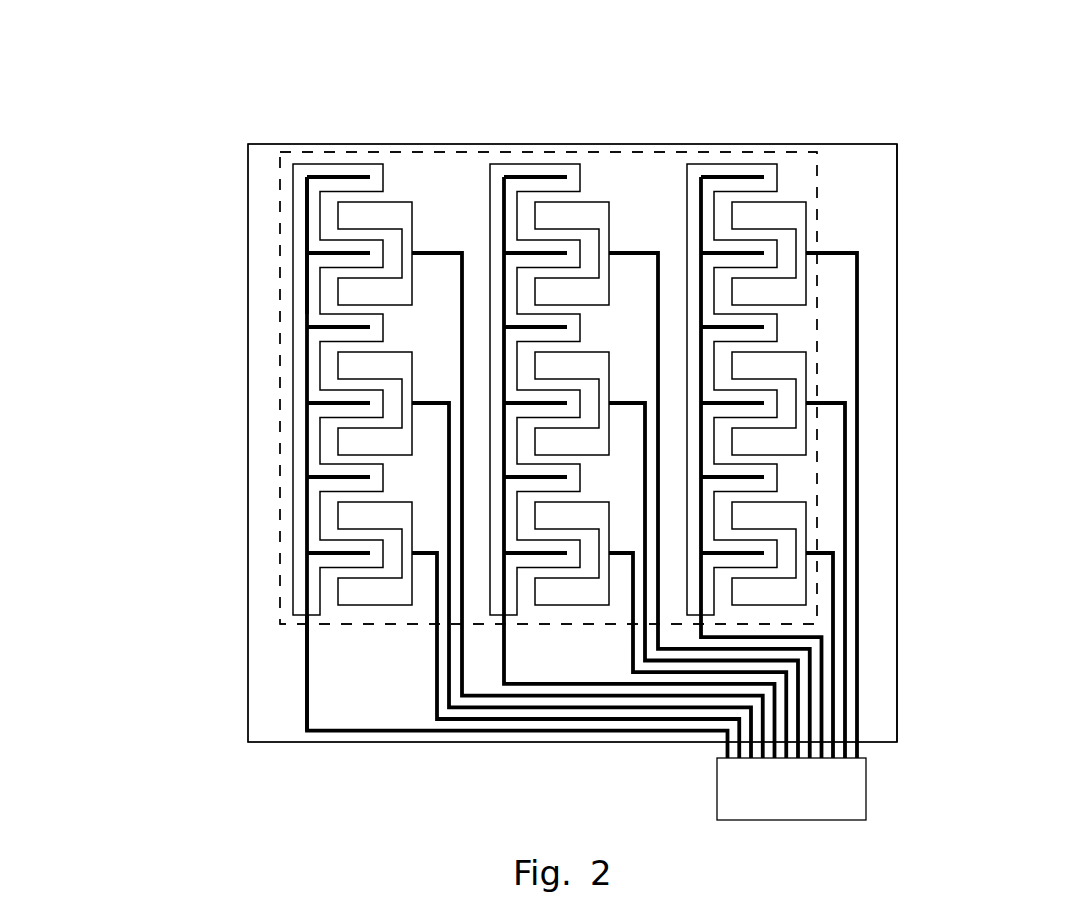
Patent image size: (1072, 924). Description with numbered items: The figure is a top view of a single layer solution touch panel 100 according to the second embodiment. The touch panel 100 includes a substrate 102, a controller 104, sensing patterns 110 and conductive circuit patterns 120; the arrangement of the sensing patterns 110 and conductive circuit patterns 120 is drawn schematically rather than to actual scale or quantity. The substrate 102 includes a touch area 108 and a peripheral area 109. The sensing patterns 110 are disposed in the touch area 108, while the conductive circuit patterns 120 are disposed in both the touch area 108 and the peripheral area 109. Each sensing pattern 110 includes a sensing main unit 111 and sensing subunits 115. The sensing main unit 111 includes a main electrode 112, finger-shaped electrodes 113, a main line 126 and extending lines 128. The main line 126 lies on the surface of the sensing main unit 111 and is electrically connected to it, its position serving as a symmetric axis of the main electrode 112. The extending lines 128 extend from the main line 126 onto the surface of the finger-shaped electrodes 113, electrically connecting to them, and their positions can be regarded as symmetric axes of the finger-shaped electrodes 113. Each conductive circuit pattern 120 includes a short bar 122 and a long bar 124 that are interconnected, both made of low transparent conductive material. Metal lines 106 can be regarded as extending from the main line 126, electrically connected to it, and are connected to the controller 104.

The single layer solution touch panel 100 is at (82, 65).
The substrate 102 is at (268, 157).
The controller 104 is at (865, 788).
The metal lines 106 is at (307, 692).
The touch area 108 is at (460, 194).
The peripheral area 109 is at (875, 564).
The sensing patterns 110 is at (757, 162).
The sensing main unit 111 is at (375, 88).
The main electrode 112 is at (310, 168).
The finger-shaped electrodes 113 is at (370, 167).
The sensing subunits 115 is at (598, 215).
The conductive circuit patterns 120 is at (977, 193).
The short bar 122 is at (833, 250).
The long bar 124 is at (860, 303).
The main line 126 is at (307, 513).
The extending lines 128 is at (318, 402).